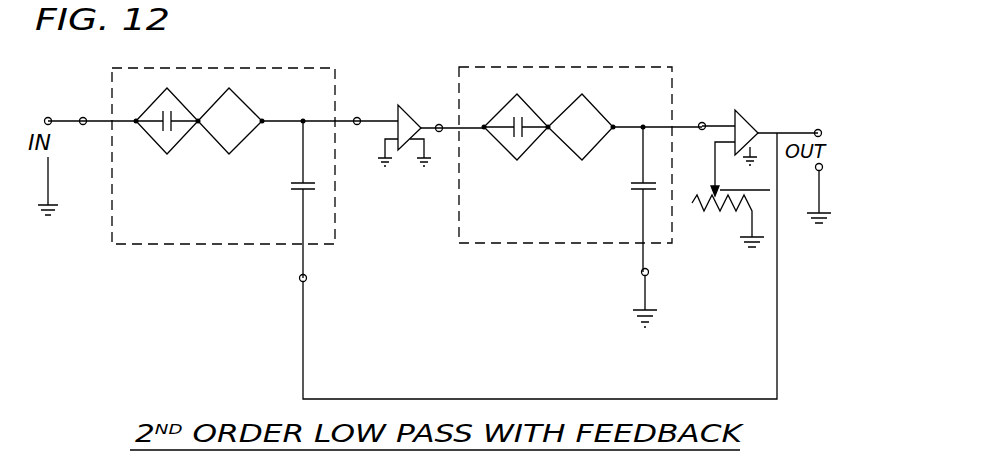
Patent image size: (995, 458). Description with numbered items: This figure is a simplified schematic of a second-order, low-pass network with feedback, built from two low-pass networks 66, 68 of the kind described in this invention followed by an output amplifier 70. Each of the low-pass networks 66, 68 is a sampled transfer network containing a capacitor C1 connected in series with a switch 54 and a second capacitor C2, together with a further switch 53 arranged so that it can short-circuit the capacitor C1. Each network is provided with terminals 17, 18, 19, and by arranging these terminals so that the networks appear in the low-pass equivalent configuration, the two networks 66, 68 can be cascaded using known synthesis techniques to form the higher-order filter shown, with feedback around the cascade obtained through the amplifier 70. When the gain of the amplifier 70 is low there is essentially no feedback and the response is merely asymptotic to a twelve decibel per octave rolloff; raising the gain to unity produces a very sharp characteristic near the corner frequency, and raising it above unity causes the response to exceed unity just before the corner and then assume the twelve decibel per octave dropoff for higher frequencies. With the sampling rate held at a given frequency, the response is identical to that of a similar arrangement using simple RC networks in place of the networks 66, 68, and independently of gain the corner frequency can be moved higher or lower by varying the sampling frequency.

The terminal 19 is at (83, 117).
The terminal 17 is at (358, 115).
The switch 53 is at (175, 152).
The switch 54 is at (248, 108).
The low-pass network 66 is at (336, 218).
The low-pass network 68 is at (459, 226).
The terminal 18 is at (299, 278).
The amplifier 70 is at (746, 122).
The capacitor C1 is at (165, 136).
The second capacitor C2 is at (290, 187).